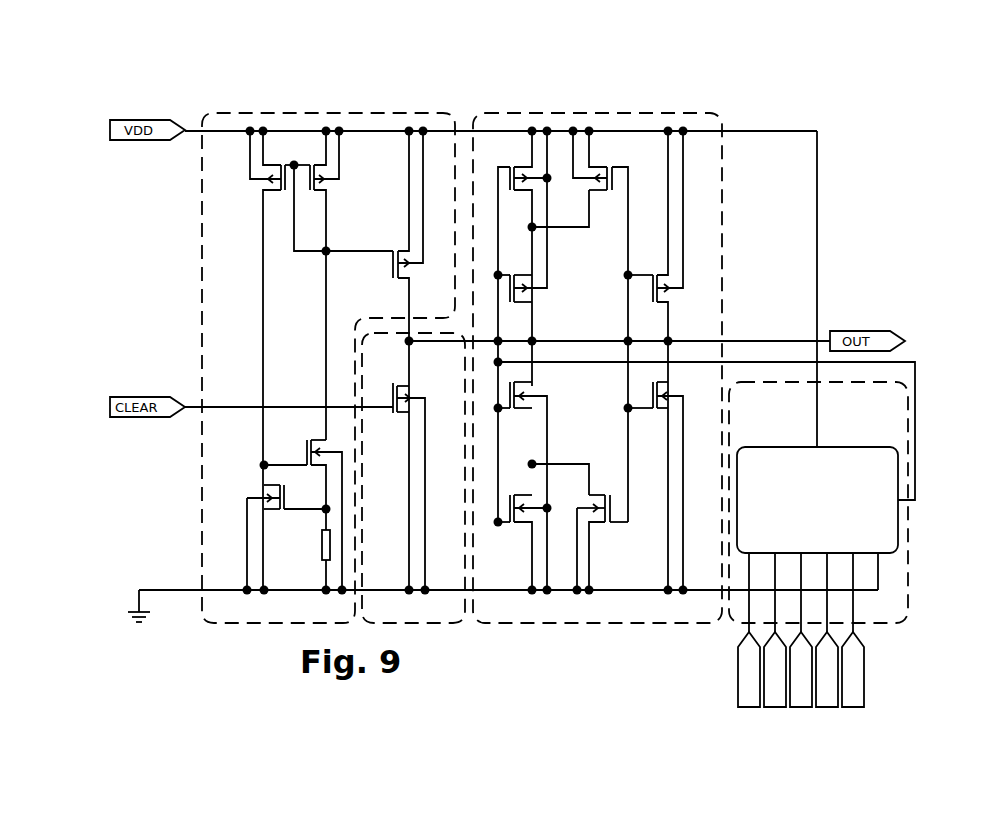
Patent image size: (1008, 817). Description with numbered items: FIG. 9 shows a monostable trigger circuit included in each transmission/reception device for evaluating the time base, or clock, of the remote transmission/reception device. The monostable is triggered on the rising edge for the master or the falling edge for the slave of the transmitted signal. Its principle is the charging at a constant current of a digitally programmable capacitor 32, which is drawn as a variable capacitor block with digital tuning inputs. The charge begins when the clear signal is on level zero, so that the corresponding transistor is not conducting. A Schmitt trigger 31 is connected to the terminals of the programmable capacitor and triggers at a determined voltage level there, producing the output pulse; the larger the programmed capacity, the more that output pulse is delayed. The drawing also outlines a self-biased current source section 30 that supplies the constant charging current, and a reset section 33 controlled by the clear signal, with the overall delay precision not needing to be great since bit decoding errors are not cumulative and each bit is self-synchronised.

The self biased current source 30 is at (422, 113).
The Schmitt trigger 31 is at (525, 113).
The digitally programmable capacitor 32 is at (769, 395).
The reset circuit 33 is at (440, 623).